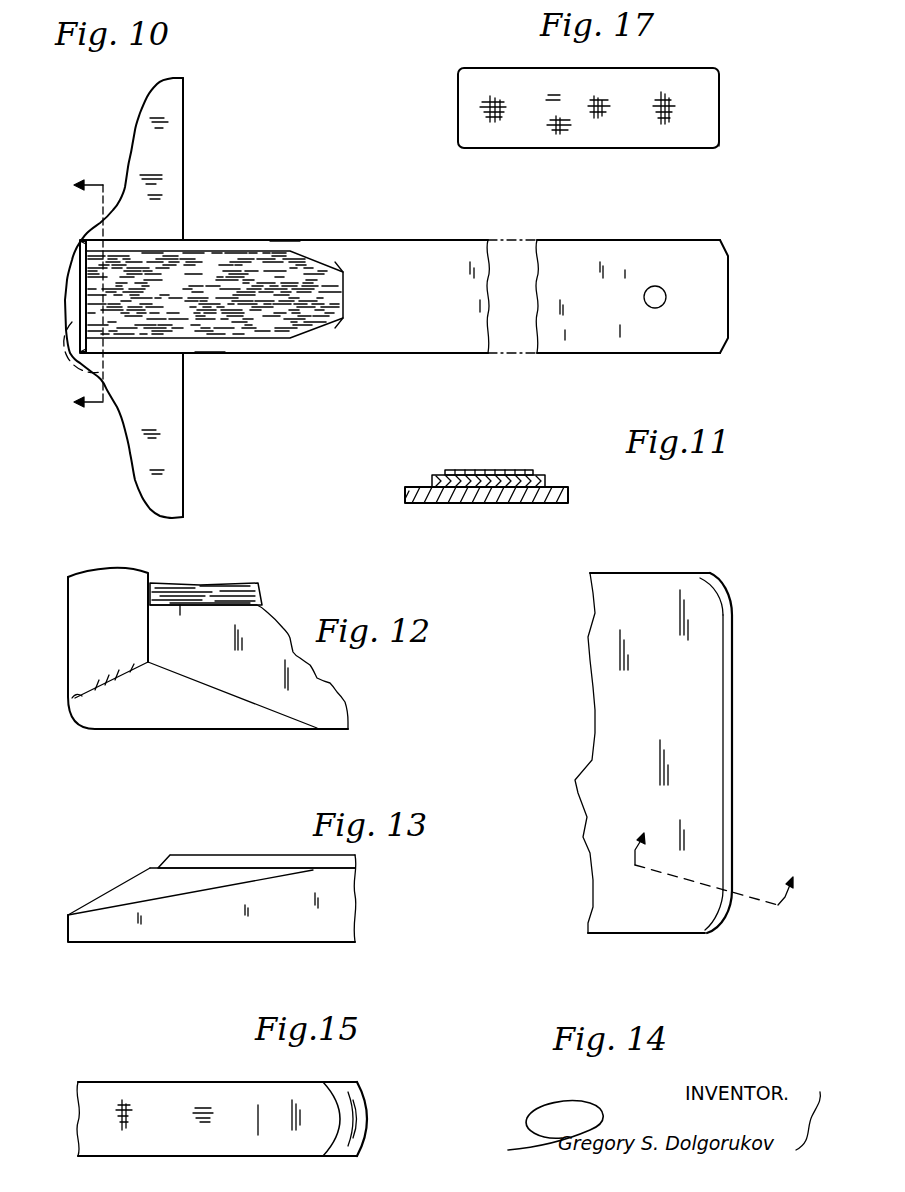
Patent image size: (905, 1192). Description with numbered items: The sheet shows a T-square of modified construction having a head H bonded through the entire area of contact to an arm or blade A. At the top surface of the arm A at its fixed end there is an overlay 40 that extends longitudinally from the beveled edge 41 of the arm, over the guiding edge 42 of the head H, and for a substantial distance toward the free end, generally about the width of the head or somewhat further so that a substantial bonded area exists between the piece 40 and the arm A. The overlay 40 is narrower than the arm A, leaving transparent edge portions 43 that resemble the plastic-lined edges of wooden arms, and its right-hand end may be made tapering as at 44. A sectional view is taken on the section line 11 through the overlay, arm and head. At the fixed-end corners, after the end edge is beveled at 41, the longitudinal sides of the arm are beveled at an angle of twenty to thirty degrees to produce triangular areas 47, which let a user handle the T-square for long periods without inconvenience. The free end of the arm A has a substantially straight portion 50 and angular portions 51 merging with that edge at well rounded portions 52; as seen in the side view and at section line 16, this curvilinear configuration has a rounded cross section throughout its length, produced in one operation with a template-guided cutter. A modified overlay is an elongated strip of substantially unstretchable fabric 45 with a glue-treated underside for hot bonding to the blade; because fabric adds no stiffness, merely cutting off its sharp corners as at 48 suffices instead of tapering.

In FIG. 10, the overlay 40 is at (224, 252).
In FIG. 11, the overlay 40 is at (455, 470).
In FIG. 12, the overlay 40 is at (230, 590).
In FIG. 13, the overlay 40 is at (215, 853).
In FIG. 10, the beveled edge 41 is at (82, 275).
In FIG. 12, the beveled edge 41 is at (100, 603).
In FIG. 13, the beveled edge 41 is at (112, 888).
In FIG. 10, the guiding edge 42 is at (184, 173).
In FIG. 10, the transparent edge portions 43 is at (283, 242).
In FIG. 11, the transparent edge portions 43 is at (432, 479).
In FIG. 10, the tapering end 44 is at (320, 349).
In FIG. 17, the pad blank 45 is at (458, 112).
In FIG. 10, the triangular areas 47 is at (84, 243).
In FIG. 12, the triangular areas 47 is at (170, 715).
In FIG. 13, the triangular areas 47 is at (153, 888).
In FIG. 17, the cut-off corners 48 is at (719, 146).
In FIG. 14, the straight portion 50 is at (733, 732).
In FIG. 15, the straight portion 50 is at (366, 1102).
In FIG. 14, the angular portions 51 is at (712, 590).
In FIG. 15, the angular portions 51 is at (343, 1135).
In FIG. 14, the rounded portions 52 is at (729, 610).
In FIG. 10, the section line 11 is at (84, 305).
In FIG. 14, the section line 16 is at (712, 874).
In FIG. 10, the arm or blade A is at (546, 239).
In FIG. 11, the arm or blade A is at (490, 489).
In FIG. 12, the arm or blade A is at (332, 707).
In FIG. 13, the arm or blade A is at (338, 910).
In FIG. 14, the arm or blade A is at (595, 709).
In FIG. 15, the arm or blade A is at (96, 1093).
In FIG. 10, the head H is at (139, 116).
In FIG. 11, the head H is at (405, 493).